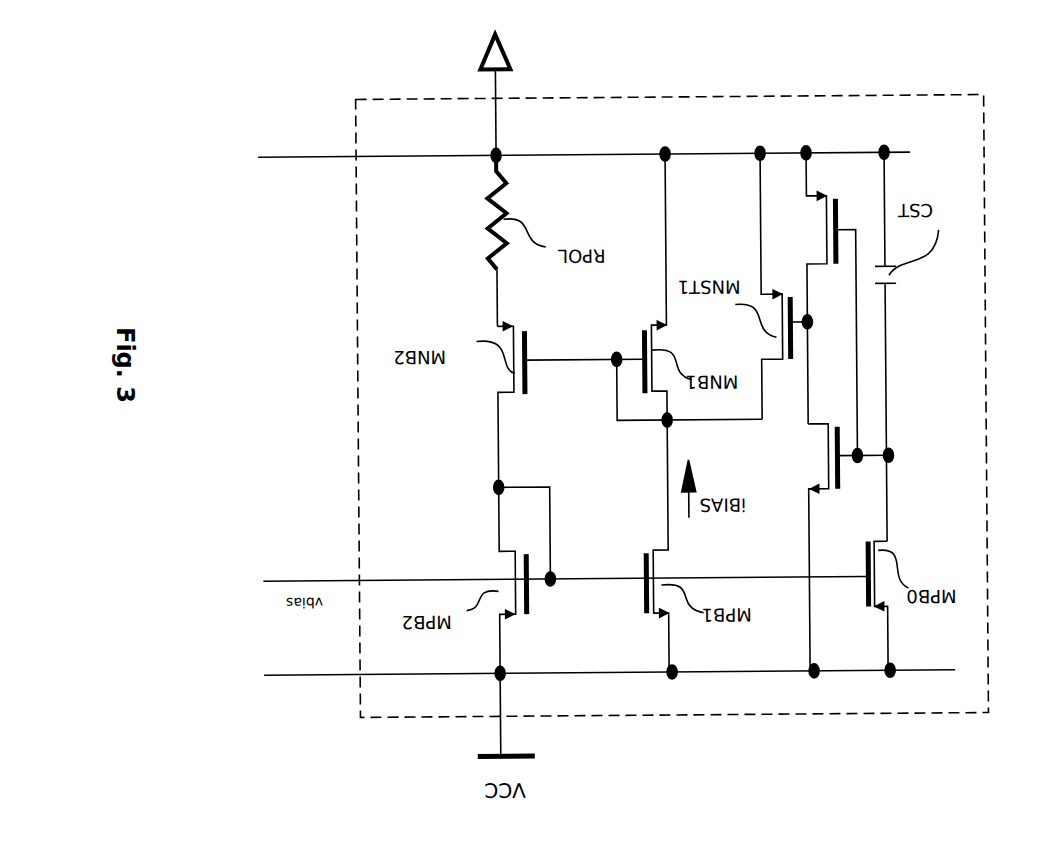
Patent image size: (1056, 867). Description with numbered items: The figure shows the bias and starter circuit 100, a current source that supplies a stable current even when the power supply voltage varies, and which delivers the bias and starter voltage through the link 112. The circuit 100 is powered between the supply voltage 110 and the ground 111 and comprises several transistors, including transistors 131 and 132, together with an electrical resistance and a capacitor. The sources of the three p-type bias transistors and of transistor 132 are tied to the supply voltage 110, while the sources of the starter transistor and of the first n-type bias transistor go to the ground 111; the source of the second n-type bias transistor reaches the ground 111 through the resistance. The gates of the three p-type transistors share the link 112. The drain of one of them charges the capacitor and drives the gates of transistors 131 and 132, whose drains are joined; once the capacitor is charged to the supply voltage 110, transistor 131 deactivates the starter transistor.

The bias and starter circuit 100 is at (985, 405).
The voltage VCC 110 is at (297, 680).
The ground 111 is at (335, 157).
The link 112 is at (335, 580).
The transistor 131 is at (828, 252).
The transistor 132 is at (823, 430).